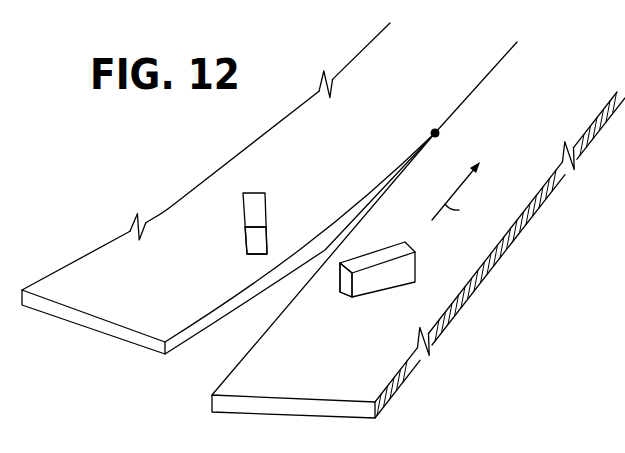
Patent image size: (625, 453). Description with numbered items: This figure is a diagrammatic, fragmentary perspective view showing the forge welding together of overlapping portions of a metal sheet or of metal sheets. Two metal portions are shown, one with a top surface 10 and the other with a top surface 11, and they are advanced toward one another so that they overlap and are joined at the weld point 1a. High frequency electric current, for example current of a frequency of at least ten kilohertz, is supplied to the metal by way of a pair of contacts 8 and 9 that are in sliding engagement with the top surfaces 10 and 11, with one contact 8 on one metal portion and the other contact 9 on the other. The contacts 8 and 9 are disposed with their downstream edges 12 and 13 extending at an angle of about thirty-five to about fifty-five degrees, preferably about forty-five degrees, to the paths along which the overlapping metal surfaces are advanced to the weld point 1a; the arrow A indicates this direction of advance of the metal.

The top surface 10 is at (529, 144).
The top surface 11 is at (386, 124).
The weld point 1a is at (431, 134).
The contact 9 is at (243, 214).
The downstream edge 13 is at (268, 248).
The contact 8 is at (373, 295).
The downstream edge 12 is at (338, 280).
The direction of movement A is at (457, 191).